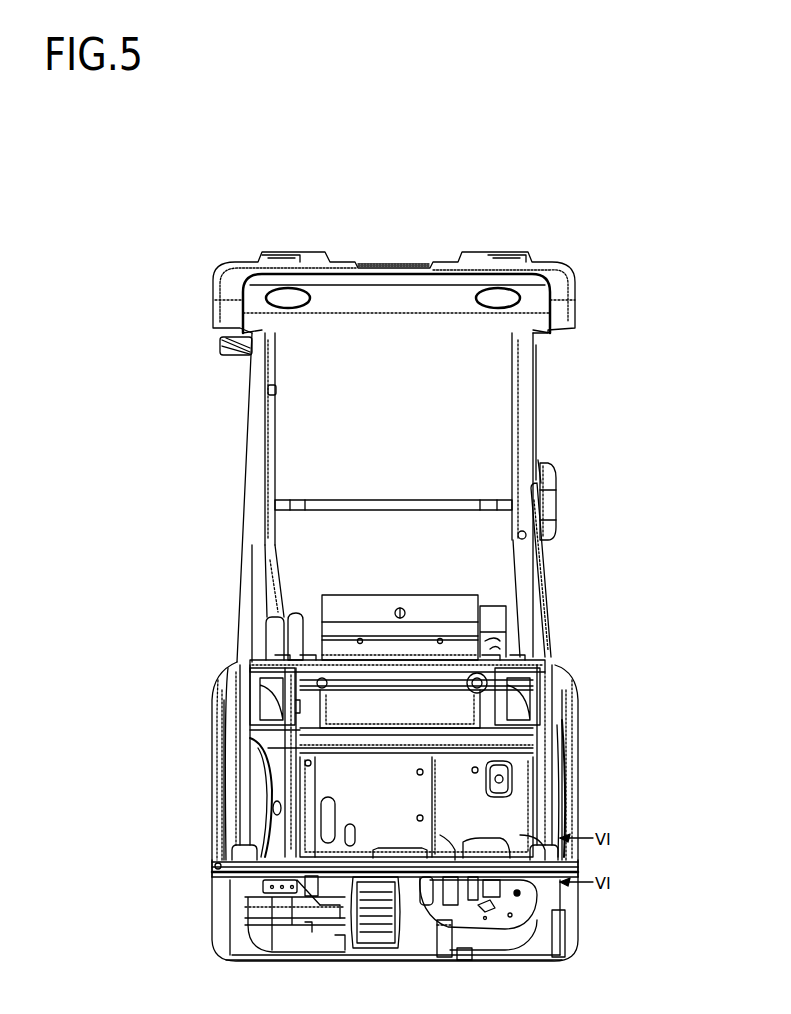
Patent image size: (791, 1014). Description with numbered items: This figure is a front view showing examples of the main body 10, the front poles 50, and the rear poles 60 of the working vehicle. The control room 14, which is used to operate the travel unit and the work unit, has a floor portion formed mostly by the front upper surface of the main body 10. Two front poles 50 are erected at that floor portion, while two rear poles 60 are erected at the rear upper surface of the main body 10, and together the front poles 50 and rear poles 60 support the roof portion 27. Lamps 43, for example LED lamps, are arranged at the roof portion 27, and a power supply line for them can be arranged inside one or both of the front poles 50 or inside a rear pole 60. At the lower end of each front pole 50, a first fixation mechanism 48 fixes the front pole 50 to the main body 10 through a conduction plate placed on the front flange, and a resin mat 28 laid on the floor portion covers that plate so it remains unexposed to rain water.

The main body 10 is at (575, 898).
The control room 14 is at (577, 407).
The roof portion 27 is at (390, 266).
The resin mat 28 is at (538, 855).
The lamps 43 is at (290, 296).
The first fixation mechanism 48 is at (200, 861).
The front poles 50 is at (225, 768).
The rear poles 60 is at (275, 603).